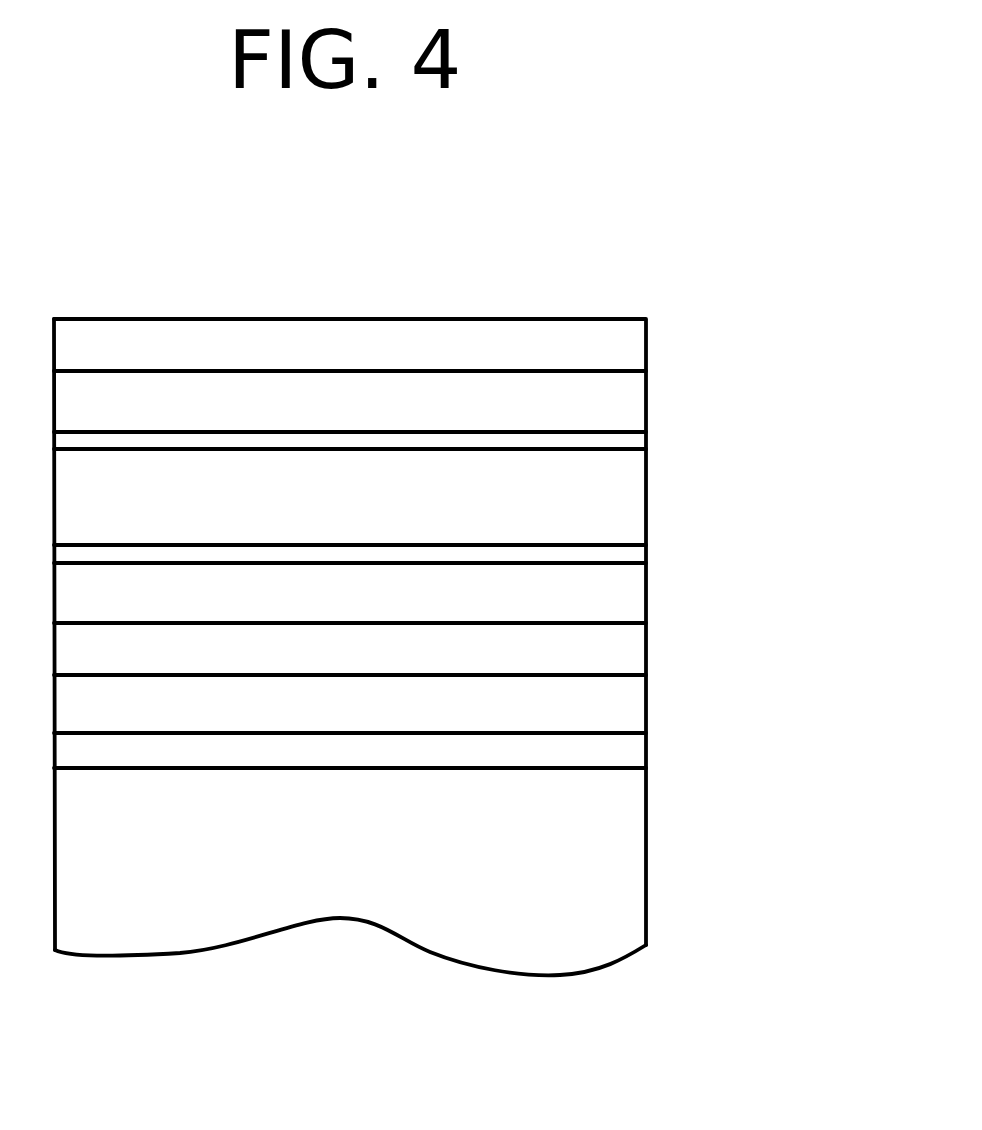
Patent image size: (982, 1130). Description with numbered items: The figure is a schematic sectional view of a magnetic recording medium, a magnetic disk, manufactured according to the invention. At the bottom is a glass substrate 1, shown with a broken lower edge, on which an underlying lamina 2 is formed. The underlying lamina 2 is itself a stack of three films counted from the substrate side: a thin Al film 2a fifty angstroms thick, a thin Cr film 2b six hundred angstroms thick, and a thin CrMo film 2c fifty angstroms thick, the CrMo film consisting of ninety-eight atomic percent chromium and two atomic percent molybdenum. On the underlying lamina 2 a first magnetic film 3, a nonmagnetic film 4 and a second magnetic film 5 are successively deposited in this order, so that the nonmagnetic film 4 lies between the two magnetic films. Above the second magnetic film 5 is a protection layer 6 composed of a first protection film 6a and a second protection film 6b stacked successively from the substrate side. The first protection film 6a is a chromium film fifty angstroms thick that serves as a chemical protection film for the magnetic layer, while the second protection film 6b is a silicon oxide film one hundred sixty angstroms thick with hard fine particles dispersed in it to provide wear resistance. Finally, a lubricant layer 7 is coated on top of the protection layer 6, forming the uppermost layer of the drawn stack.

The glass substrate 1 is at (585, 872).
The underlying lamina 2 is at (842, 638).
The thin Al film 2a is at (625, 750).
The thin Cr film 2b is at (625, 709).
The thin CrMo film 2c is at (625, 657).
The first magnetic film 3 is at (625, 606).
The nonmagnetic film 4 is at (625, 553).
The second magnetic film 5 is at (625, 494).
The protection layer 6 is at (842, 368).
The first protection film 6a is at (625, 441).
The second protection film 6b is at (625, 398).
The lubricant layer 7 is at (413, 345).